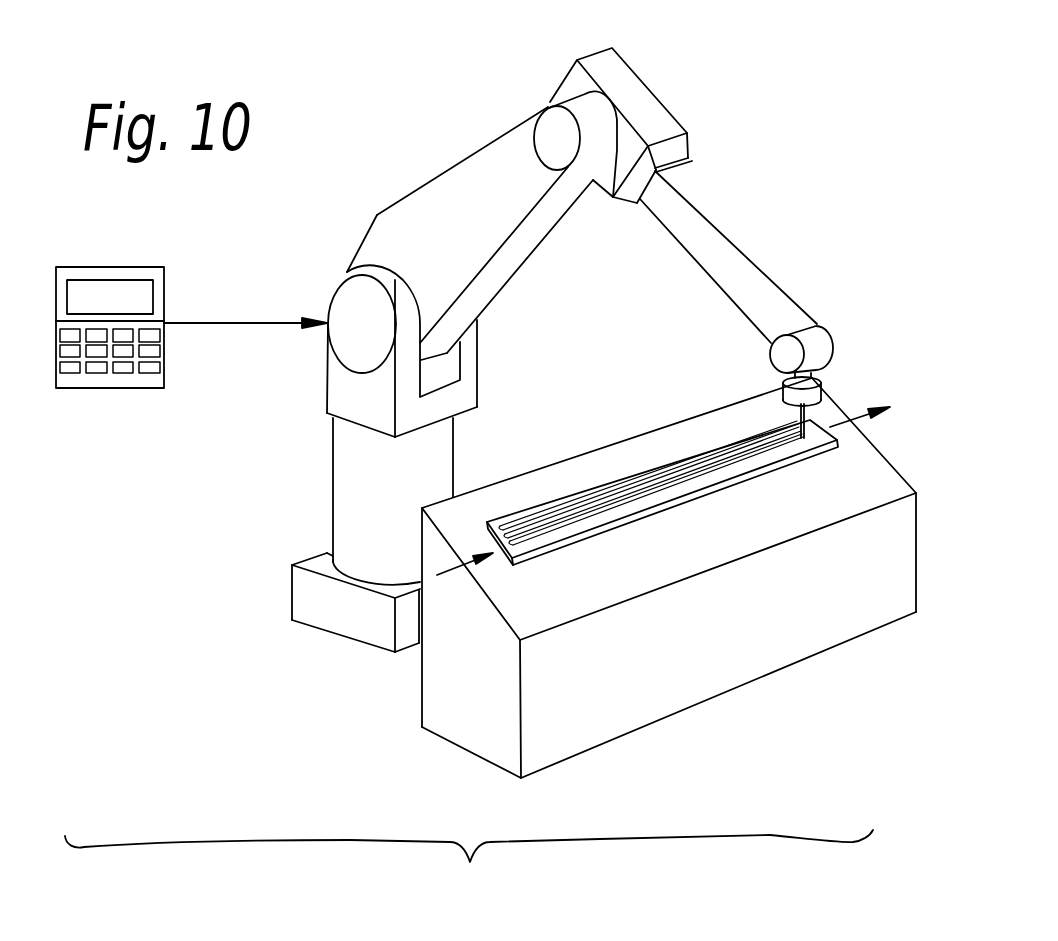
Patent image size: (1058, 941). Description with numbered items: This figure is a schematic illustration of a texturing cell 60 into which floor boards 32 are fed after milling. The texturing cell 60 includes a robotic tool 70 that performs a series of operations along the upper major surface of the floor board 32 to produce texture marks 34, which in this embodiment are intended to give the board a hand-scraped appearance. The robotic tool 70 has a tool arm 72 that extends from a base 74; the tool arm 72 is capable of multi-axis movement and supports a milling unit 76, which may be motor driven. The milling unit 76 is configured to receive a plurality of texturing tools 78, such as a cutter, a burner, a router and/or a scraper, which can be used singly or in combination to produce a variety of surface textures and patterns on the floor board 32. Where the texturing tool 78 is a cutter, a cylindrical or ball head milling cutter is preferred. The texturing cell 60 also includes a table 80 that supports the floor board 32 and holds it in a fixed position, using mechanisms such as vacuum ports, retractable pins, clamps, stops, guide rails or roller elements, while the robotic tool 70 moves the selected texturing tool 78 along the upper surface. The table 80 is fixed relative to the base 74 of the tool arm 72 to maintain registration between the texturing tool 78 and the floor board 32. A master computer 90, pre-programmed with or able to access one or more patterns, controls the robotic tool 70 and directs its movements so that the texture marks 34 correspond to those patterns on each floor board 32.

The floor board 32 is at (714, 518).
The texture marks 34 is at (627, 487).
The texturing cell 60 is at (469, 864).
The robotic tool 70 is at (686, 74).
The tool arm 72 is at (733, 245).
The base 74 is at (302, 596).
The milling unit 76 is at (821, 384).
The texturing tool 78 is at (783, 415).
The table 80 is at (833, 408).
The master computer 90 is at (130, 267).